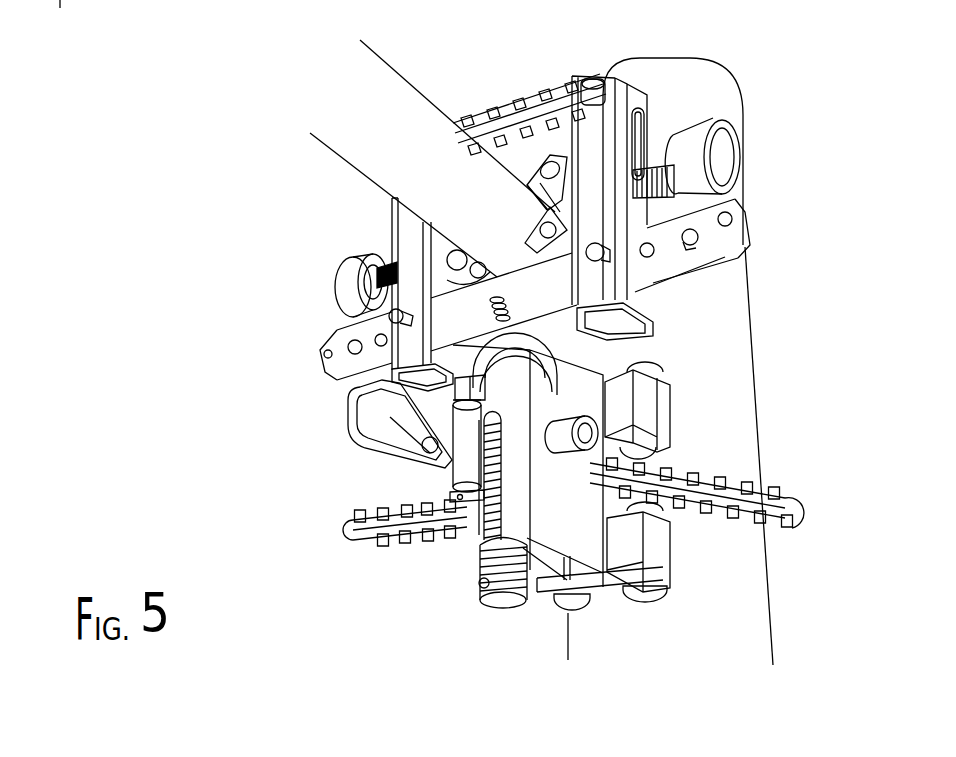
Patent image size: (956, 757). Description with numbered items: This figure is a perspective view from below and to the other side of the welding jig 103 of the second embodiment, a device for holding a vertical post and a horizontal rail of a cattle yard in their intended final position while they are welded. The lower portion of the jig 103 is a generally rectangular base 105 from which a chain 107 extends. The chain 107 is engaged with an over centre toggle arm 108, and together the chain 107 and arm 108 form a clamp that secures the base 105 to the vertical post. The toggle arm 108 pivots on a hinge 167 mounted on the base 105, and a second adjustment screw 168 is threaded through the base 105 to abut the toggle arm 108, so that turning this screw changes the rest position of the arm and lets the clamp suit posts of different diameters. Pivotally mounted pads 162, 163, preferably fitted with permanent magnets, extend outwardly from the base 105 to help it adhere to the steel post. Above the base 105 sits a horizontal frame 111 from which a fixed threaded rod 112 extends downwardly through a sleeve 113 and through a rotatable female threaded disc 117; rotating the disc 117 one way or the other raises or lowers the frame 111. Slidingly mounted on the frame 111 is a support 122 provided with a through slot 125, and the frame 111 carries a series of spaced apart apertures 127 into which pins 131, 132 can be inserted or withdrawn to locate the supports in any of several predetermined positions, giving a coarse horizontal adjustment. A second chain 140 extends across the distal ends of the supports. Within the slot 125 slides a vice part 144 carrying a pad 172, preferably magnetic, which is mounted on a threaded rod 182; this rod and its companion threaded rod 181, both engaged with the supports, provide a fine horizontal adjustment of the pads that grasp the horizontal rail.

The jig 103 is at (146, 262).
The base 105 is at (263, 0).
The chain 107 is at (737, 477).
The over centre toggle arm 108 is at (350, 427).
The horizontal frame 111 is at (740, 237).
The threaded rod 112 is at (503, 610).
The sleeve 113 is at (520, 328).
The female threaded disc 117 is at (480, 353).
The support 122 is at (600, 117).
The through slot 125 is at (637, 137).
The spaced apart apertures 127 is at (692, 245).
The pin 131 is at (413, 313).
The pin 132 is at (597, 267).
The second chain 140 is at (526, 95).
The vice part 144 is at (566, 155).
The pivotally mounted pad 162 is at (670, 563).
The pivotally mounted pad 163 is at (673, 395).
The hinge 167 is at (458, 470).
The second adjustment screw 168 is at (570, 440).
The pad 172 is at (529, 229).
The threaded rod 181 is at (377, 290).
The threaded rod 182 is at (687, 197).